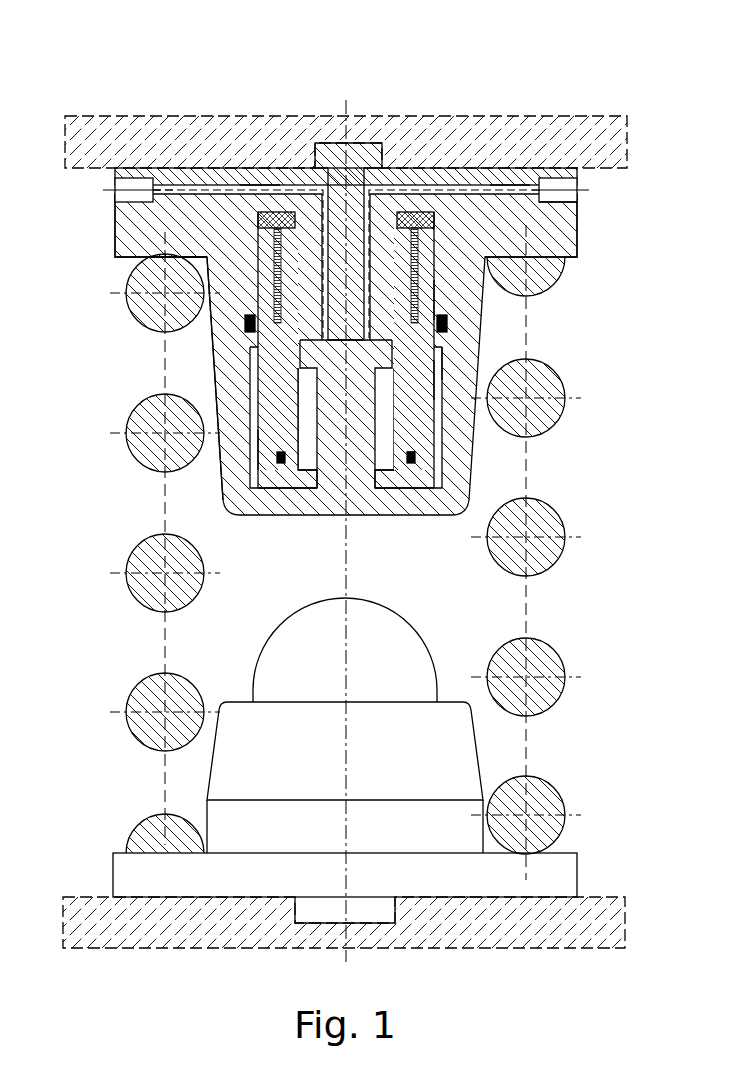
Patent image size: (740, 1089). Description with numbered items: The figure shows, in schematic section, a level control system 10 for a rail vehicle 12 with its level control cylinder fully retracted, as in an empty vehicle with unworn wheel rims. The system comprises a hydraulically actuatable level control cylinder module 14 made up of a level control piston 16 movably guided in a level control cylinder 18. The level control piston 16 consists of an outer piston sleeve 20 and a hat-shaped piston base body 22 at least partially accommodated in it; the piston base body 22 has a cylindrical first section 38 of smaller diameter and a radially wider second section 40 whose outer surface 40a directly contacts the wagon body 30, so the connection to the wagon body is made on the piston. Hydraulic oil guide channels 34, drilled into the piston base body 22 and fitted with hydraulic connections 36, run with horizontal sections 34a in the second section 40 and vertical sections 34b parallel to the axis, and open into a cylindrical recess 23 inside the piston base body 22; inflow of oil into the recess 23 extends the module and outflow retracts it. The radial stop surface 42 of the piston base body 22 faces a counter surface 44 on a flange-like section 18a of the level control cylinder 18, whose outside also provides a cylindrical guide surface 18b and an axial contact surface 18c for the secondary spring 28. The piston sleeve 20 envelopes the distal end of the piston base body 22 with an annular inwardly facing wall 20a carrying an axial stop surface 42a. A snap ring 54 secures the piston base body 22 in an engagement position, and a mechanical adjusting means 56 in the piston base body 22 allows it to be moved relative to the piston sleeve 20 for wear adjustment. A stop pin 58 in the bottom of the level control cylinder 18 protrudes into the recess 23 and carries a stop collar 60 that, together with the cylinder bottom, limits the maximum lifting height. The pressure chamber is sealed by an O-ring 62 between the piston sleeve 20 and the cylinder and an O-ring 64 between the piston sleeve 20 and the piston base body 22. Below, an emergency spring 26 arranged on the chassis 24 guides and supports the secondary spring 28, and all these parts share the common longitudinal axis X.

The level control system 10 is at (243, 50).
The rail vehicle 12 is at (26, 99).
The level control cylinder module 14 is at (190, 362).
The level control piston 16 is at (442, 345).
The level control cylinder 18 is at (483, 427).
The flange-like section 18a is at (578, 230).
The cylindrical guide surface 18b is at (455, 300).
The axial contact surface 18c is at (200, 258).
The piston sleeve 20 is at (420, 452).
The annular inwardly facing wall 20a is at (398, 483).
The piston base body 22 is at (275, 300).
The recess 23 is at (310, 453).
The chassis 24 is at (593, 915).
The emergency spring 26 is at (392, 650).
The secondary spring 28 is at (555, 652).
The wagon body 30 is at (607, 153).
The hydraulic oil guide channels 34 is at (195, 175).
The horizontal sections of the hydraulic oil guide channels 34a is at (258, 175).
The vertical sections of the hydraulic oil guide channels 34b is at (350, 150).
The hydraulic connections 36 is at (115, 190).
The cylindrical first section 38 is at (276, 455).
The second section 40 is at (175, 185).
The outer surface 40a is at (130, 167).
The radial stop surface 42 is at (552, 216).
The axial stop surface 42a is at (292, 472).
The counter surface 44 is at (563, 160).
The snap ring 54 is at (435, 222).
The adjusting means 56 is at (455, 372).
The stop pin 58 is at (347, 487).
The stop collar 60 is at (416, 456).
The O-ring 62 is at (247, 325).
The O-ring 64 is at (265, 480).
The longitudinal axis X is at (345, 743).